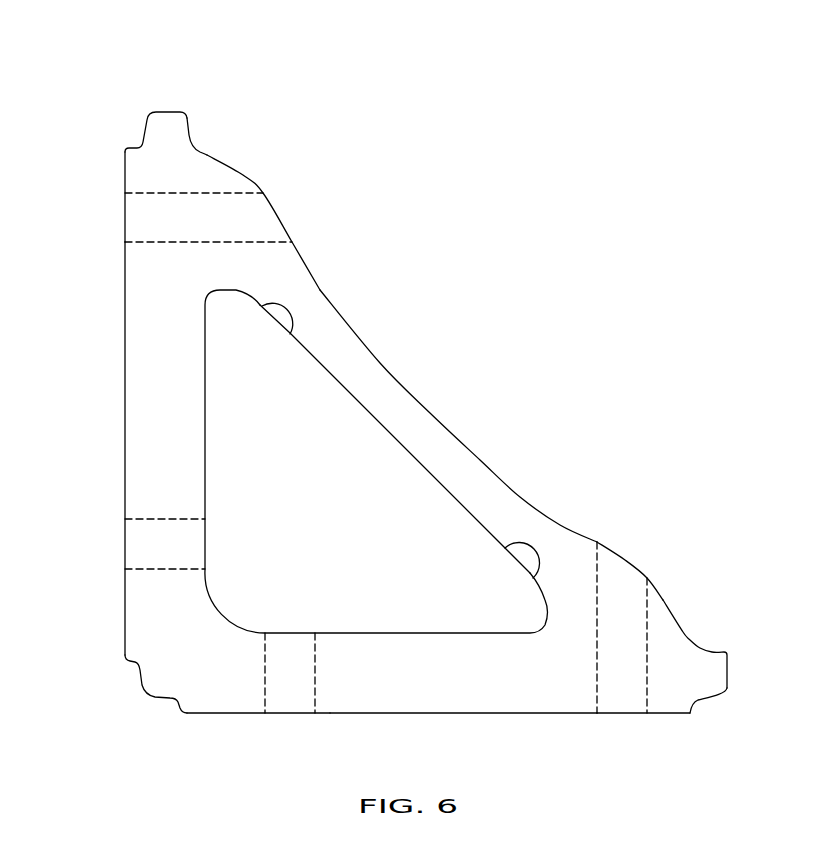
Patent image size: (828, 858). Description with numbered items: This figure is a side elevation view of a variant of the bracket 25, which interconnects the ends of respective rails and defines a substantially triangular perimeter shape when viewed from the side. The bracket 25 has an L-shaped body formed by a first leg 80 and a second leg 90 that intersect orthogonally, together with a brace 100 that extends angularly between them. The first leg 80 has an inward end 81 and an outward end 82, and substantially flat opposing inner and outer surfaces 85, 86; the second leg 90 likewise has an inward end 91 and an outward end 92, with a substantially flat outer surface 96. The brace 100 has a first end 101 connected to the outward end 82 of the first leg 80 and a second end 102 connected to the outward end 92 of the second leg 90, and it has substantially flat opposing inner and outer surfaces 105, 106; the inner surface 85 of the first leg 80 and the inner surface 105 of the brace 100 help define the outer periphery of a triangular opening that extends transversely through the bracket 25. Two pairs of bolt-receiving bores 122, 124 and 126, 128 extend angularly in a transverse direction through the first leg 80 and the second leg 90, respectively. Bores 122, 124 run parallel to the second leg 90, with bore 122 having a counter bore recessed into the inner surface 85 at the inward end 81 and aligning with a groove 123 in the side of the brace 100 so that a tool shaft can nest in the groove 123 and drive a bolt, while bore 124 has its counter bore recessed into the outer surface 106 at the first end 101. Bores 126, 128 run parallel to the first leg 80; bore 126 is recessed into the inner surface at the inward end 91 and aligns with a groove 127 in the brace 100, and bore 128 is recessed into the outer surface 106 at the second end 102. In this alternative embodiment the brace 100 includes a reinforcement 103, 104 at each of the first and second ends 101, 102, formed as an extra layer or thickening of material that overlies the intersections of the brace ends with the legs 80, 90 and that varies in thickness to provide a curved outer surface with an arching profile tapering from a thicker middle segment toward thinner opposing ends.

The bracket 25 is at (485, 192).
The first leg 80 is at (417, 717).
The inward end of first leg 81 is at (243, 692).
The outward end of first leg 82 is at (690, 677).
The inner surface of first leg 85 is at (400, 632).
The outer surface of first leg 86 is at (667, 713).
The second leg 90 is at (143, 475).
The inward end of second leg 91 is at (137, 633).
The outward end of second leg 92 is at (162, 142).
The outer surface of second leg 96 is at (125, 175).
The brace 100 is at (425, 352).
The first end of brace 101 is at (692, 617).
The second end of brace 102 is at (222, 145).
The reinforcement 103 is at (658, 607).
The reinforcement 104 is at (222, 178).
The inner surface of brace 105 is at (362, 408).
The outer surface of brace 106 is at (428, 410).
The bolt-receiving bore 122 is at (287, 697).
The groove 123 is at (275, 313).
The bolt-receiving bore 124 is at (620, 700).
The bolt-receiving bore 126 is at (135, 547).
The groove 127 is at (525, 560).
The bolt-receiving bore 128 is at (137, 222).